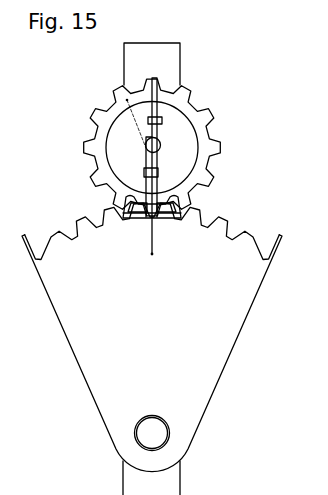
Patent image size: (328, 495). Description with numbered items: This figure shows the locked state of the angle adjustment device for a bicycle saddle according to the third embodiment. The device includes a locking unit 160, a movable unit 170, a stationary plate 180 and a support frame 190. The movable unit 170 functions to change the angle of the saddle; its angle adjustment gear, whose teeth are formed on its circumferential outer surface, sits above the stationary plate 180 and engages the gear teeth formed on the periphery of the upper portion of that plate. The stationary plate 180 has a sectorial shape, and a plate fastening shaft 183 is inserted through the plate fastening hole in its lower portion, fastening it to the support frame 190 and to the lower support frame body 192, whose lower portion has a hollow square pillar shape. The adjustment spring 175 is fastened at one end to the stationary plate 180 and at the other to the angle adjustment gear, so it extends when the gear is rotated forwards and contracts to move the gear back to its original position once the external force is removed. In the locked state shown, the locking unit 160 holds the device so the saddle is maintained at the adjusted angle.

The support frame 190 is at (170, 63).
The locking unit 160 is at (158, 131).
The movable unit 170 is at (198, 173).
The adjustment spring 175 is at (138, 235).
The stationary plate 180 is at (195, 369).
The plate fastening shaft 183 is at (152, 435).
The lower support frame body 192 is at (182, 478).